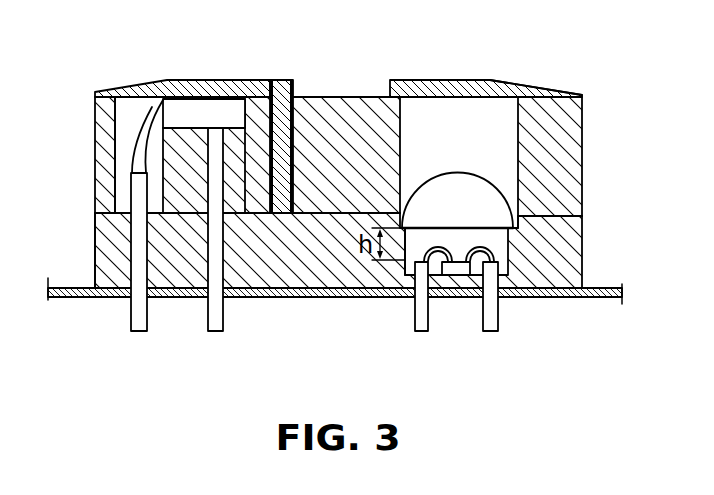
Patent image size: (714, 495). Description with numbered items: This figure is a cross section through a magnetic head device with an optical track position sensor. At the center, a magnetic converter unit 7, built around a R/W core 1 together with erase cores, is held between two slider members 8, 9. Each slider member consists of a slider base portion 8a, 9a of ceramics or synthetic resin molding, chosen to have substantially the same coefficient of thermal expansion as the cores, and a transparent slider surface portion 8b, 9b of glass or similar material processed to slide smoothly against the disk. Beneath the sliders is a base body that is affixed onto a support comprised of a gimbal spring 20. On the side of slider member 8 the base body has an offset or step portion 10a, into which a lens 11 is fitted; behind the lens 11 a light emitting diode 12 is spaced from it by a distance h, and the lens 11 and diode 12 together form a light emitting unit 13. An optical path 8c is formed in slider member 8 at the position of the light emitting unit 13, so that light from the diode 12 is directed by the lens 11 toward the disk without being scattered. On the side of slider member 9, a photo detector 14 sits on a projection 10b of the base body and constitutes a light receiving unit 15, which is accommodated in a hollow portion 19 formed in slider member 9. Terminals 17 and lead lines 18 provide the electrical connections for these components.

The R/W core 1 is at (283, 213).
The magnetic converter unit 7 is at (282, 70).
The slider member 8 is at (357, 247).
The slider base portion 8a is at (583, 142).
The slider surface portion 8b is at (548, 88).
The optical path 8c is at (518, 125).
The slider member 9 is at (357, 247).
The slider base portion 9a is at (95, 131).
The slider surface portion 9b is at (357, 155).
The step portion 10a is at (520, 225).
The projection 10b is at (247, 217).
The lens 11 is at (455, 176).
The light emitting diode 12 is at (460, 278).
The light emitting unit 13 is at (417, 243).
The photo detector 14 is at (220, 107).
The light receiving unit 15 is at (190, 90).
The terminals 17 is at (138, 333).
The lead lines 18 is at (147, 117).
The hollow portion 19 is at (111, 193).
The gimbal spring 20 is at (602, 288).